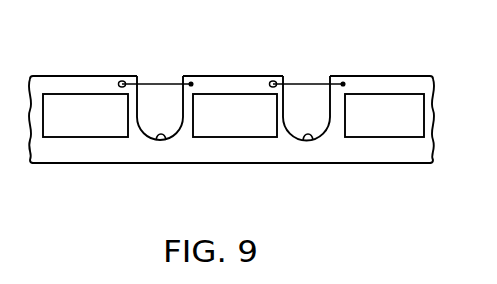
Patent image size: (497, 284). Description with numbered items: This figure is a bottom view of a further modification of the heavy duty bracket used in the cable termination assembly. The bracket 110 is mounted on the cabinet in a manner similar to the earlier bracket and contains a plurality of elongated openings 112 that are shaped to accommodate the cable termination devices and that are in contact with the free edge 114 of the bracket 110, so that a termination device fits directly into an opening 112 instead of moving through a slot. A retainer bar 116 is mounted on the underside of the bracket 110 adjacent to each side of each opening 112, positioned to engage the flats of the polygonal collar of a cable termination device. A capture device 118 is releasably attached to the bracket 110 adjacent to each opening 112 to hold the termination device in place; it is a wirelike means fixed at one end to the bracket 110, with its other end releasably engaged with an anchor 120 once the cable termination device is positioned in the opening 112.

The bracket 110 is at (121, 158).
The elongated opening 112 is at (158, 141).
The free edge 114 is at (420, 73).
The retainer bar 116 is at (57, 105).
The capture device 118 is at (168, 81).
The anchor 120 is at (121, 80).